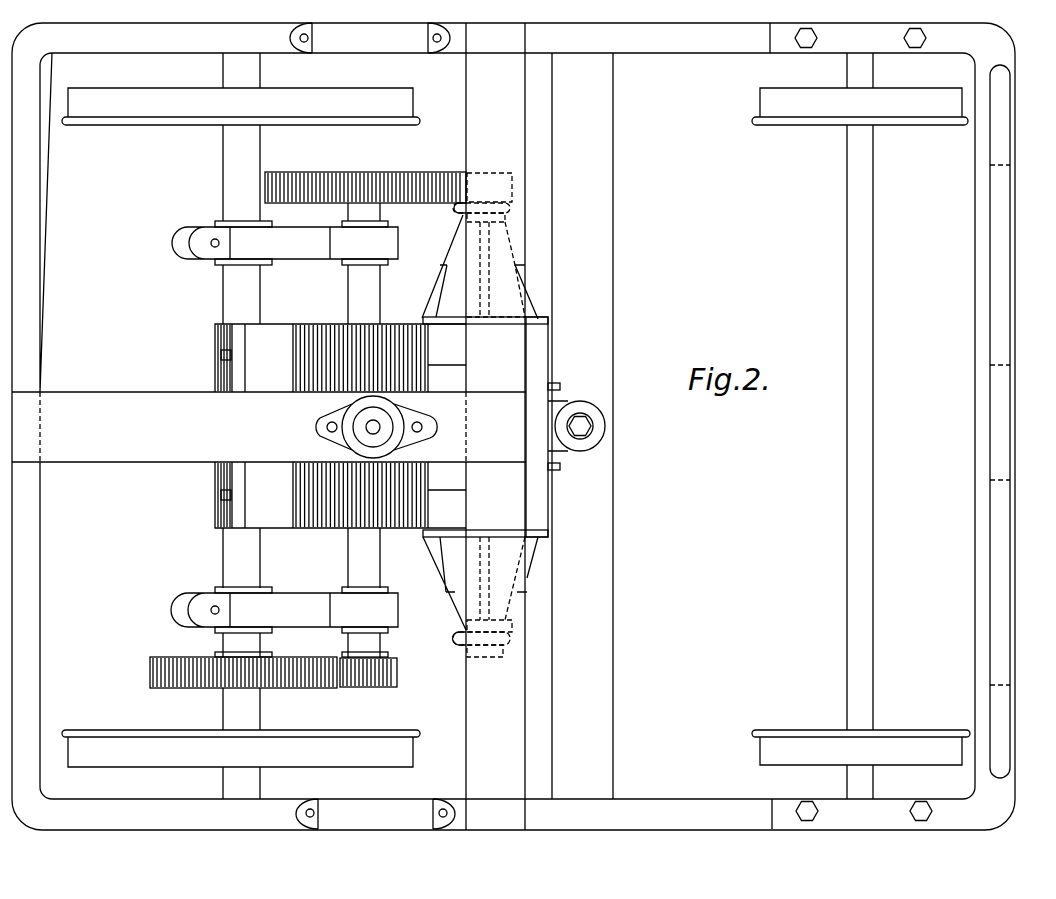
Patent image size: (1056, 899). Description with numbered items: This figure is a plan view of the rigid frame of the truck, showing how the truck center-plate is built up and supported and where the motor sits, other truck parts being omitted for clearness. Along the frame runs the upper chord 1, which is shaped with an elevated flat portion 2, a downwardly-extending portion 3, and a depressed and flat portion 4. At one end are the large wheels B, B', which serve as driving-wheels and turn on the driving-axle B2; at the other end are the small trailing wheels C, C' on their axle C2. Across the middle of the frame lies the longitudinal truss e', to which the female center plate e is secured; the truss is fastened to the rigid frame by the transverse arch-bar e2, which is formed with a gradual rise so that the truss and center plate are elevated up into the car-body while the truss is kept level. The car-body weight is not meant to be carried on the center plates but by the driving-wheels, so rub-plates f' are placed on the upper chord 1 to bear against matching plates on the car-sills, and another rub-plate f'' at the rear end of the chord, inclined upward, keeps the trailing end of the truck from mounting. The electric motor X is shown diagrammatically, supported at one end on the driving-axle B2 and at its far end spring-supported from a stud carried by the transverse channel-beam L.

The upper chord 1 is at (513, 426).
The elevated flat portion 2 is at (495, 438).
The downwardly-extending portion 3 is at (697, 785).
The depressed and flat portion 4 is at (851, 426).
The large wheel B is at (251, 750).
The large wheel B' is at (241, 92).
The driving-axle B2 is at (229, 178).
The small truck or trailing wheel C is at (861, 760).
The small truck or trailing wheel C' is at (860, 117).
The axle C2 is at (870, 285).
The female center plate e is at (376, 427).
The longitudinal truss e' is at (269, 427).
The transverse arch-bar e2 is at (443, 409).
The rub-plate f' is at (660, 426).
The rub-plate f'' is at (1012, 421).
The electric motor X is at (340, 426).
The transverse channel-beam L is at (514, 427).